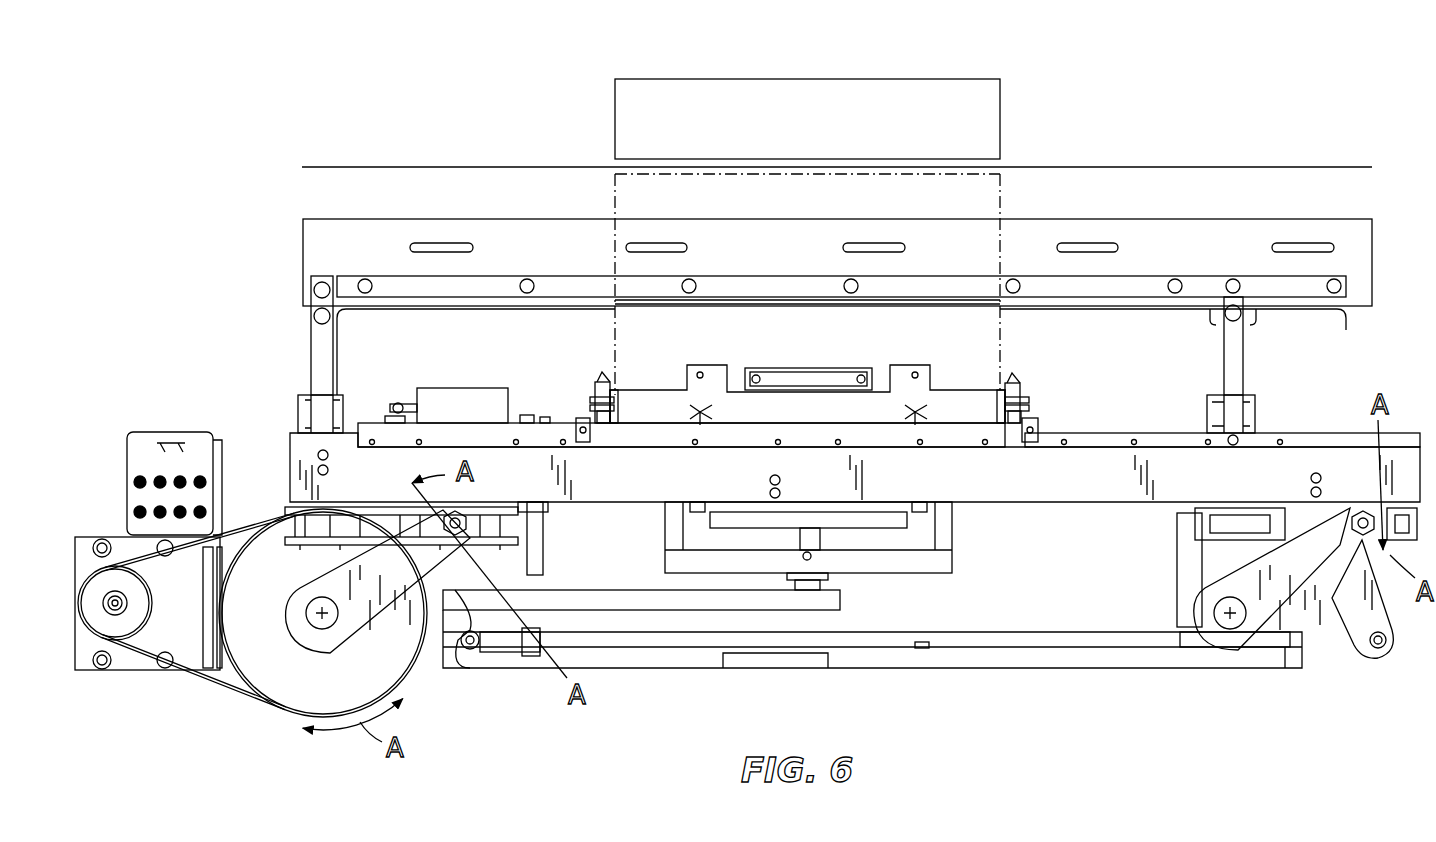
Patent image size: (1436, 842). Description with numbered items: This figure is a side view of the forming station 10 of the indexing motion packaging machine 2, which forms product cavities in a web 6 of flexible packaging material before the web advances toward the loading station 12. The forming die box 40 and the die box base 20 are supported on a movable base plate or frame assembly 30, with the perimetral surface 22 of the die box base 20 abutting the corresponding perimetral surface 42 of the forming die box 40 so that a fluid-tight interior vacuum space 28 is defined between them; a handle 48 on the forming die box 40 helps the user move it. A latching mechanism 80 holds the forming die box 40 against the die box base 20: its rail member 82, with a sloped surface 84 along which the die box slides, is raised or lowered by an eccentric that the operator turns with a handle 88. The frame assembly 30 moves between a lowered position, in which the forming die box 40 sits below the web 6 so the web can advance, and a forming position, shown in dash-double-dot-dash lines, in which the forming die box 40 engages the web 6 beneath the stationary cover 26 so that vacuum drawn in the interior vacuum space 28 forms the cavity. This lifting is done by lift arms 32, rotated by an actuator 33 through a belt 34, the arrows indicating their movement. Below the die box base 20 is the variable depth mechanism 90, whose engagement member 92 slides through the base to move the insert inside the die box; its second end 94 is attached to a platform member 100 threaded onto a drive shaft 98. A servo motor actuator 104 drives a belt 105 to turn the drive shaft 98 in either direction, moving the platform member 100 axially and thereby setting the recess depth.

The indexing motion packaging machine 2 is at (545, 72).
The web 6 is at (1270, 163).
The forming station 10 is at (1175, 88).
The loading station 12 is at (305, 85).
The die box base 20 is at (970, 405).
The perimetral surface 22 is at (618, 395).
The cover 26 is at (975, 100).
The interior vacuum space 28 is at (245, 355).
The frame assembly 30 is at (1360, 355).
The lift arms 32 is at (460, 612).
The actuator 33 is at (233, 700).
The belt 34 is at (140, 650).
The forming die box 40 is at (985, 322).
The perimetral surface 42 is at (603, 380).
The handle 48 is at (810, 380).
The latching mechanism 80 is at (550, 360).
The rail member 82 is at (588, 400).
The sloped surface 84 is at (598, 410).
The handle 88 is at (580, 445).
The variable depth mechanism 90 is at (940, 600).
The engagement member 92 is at (700, 510).
The second end 94 is at (735, 495).
The drive shaft 98 is at (820, 532).
The platform member 100 is at (870, 525).
The actuator 104 is at (445, 400).
The belt 105 is at (690, 600).